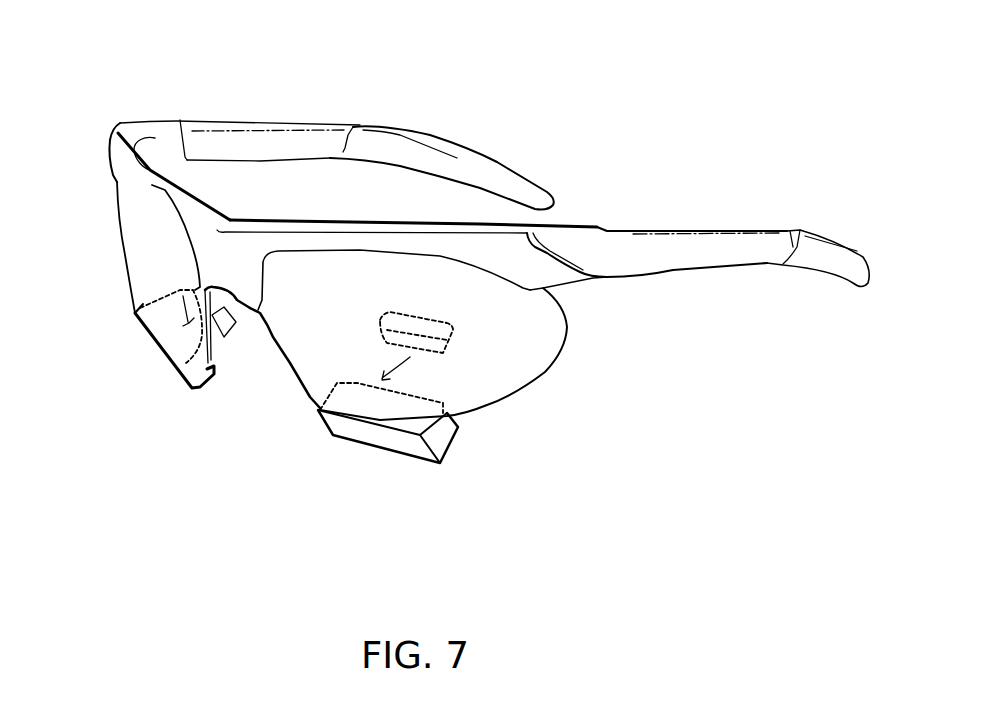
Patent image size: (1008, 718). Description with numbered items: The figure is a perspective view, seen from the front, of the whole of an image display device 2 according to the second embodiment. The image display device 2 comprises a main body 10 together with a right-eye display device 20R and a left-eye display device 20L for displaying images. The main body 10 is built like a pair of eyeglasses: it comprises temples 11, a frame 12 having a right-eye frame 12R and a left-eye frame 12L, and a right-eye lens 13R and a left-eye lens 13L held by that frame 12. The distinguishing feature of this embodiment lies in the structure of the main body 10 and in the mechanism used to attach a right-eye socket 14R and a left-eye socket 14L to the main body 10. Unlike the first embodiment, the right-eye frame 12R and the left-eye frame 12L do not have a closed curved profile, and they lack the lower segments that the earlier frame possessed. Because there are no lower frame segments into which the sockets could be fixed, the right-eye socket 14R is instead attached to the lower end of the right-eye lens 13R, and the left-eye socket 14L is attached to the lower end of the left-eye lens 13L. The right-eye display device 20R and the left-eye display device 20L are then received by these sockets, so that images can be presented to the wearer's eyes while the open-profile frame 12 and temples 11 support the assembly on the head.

The image display device 2 is at (302, 510).
The main body 10 is at (150, 113).
The temples 11 is at (263, 127).
The frame 12 is at (237, 213).
The right-eye frame 12R is at (120, 133).
The left-eye frame 12L is at (330, 226).
The right-eye lens 13R is at (133, 285).
The left-eye lens 13L is at (517, 365).
The right-eye socket 14R is at (195, 395).
The left-eye socket 14L is at (447, 445).
The right-eye display device 20R is at (230, 337).
The left-eye display device 20L is at (453, 337).